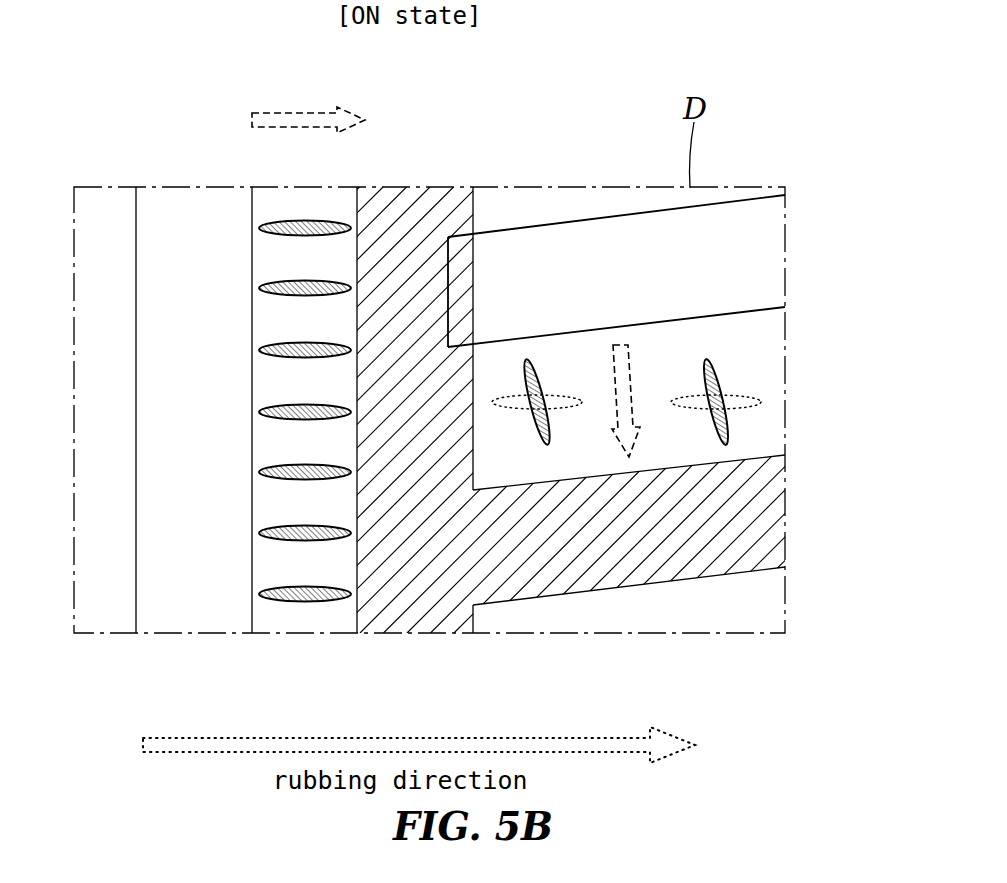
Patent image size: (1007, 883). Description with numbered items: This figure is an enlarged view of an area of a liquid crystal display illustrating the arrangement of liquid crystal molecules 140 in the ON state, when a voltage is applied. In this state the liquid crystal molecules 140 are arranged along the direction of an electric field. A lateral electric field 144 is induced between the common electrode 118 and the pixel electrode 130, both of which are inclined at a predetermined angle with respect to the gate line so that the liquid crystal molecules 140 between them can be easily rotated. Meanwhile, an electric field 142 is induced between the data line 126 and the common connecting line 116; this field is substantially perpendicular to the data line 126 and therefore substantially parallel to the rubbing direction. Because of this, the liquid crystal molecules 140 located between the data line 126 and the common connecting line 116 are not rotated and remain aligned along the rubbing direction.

The common connecting line 116 is at (357, 633).
The common electrode 118 is at (785, 455).
The data line 126 is at (136, 633).
The pixel electrode 130 is at (785, 195).
The liquid crystal molecules 140 is at (330, 222).
The electric field 142 is at (280, 118).
The lateral electric field 144 is at (617, 347).